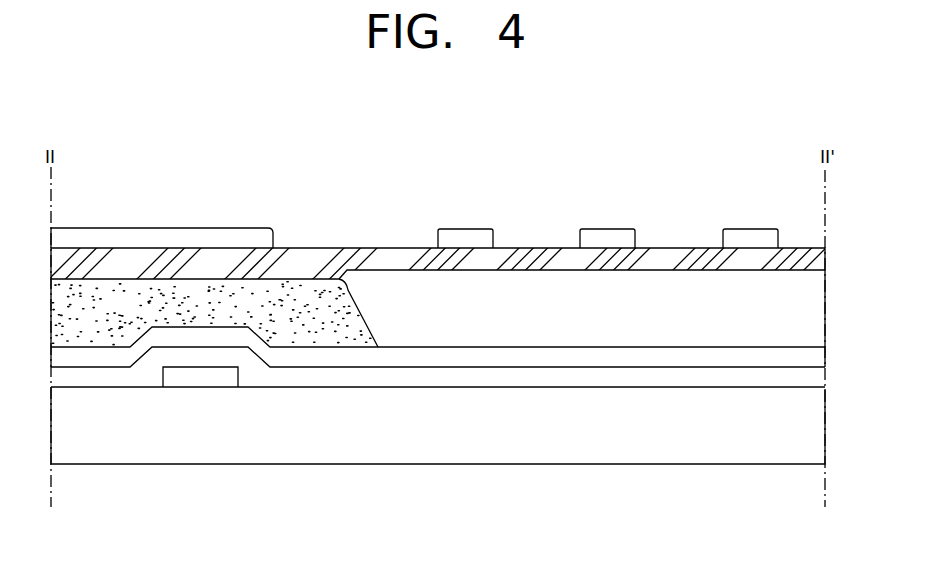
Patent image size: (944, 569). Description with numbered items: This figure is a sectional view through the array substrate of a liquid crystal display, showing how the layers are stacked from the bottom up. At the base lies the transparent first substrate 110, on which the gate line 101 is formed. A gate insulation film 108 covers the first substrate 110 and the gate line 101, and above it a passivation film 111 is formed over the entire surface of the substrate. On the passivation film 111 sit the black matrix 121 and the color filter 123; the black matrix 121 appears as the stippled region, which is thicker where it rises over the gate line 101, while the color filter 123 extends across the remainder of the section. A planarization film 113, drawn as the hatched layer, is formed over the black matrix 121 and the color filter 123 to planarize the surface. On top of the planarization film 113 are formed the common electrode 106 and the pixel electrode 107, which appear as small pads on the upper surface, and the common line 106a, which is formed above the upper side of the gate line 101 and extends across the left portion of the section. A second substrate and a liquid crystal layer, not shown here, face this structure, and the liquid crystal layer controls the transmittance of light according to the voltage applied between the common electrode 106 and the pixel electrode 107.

The gate line 101 is at (196, 378).
The common electrode 106 is at (608, 242).
The common line 106a is at (200, 242).
The pixel electrode 107 is at (465, 241).
The gate insulation film 108 is at (808, 387).
The first substrate 110 is at (808, 437).
The passivation film 111 is at (808, 357).
The planarization film 113 is at (808, 260).
The black matrix 121 is at (113, 303).
The color filter 123 is at (808, 305).